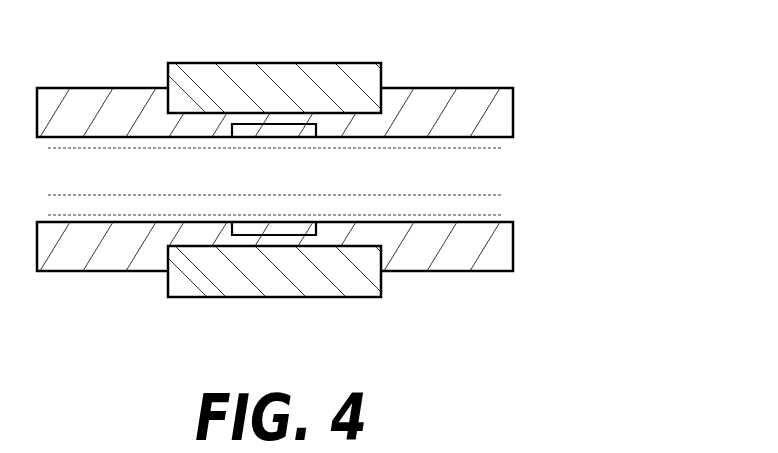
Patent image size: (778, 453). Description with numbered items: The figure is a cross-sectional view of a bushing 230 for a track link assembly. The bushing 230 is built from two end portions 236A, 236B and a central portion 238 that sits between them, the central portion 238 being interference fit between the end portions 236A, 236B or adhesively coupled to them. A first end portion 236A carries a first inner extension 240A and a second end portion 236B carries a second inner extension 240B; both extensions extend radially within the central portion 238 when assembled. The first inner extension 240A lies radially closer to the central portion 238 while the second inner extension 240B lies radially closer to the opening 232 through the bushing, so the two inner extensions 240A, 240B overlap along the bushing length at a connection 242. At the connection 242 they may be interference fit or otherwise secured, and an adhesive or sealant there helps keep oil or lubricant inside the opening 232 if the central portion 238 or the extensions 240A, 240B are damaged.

The bushing 230 is at (594, 127).
The opening 232 is at (493, 173).
The first end portion 236A is at (80, 88).
The second end portion 236B is at (482, 88).
The central portion 238 is at (308, 63).
The first inner extension 240A is at (271, 124).
The second inner extension 240B is at (296, 124).
The connection 242 is at (275, 235).